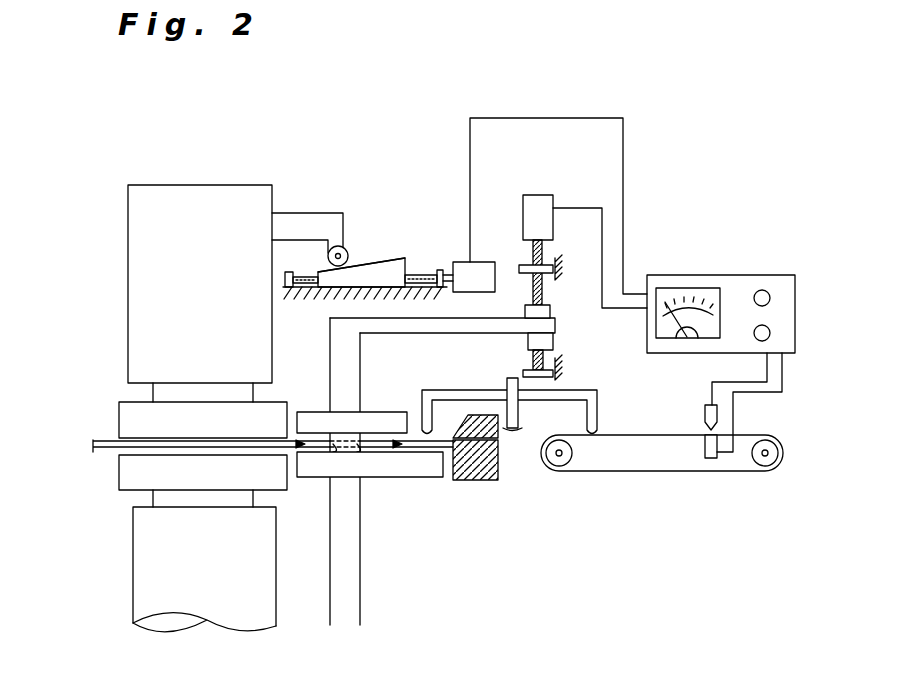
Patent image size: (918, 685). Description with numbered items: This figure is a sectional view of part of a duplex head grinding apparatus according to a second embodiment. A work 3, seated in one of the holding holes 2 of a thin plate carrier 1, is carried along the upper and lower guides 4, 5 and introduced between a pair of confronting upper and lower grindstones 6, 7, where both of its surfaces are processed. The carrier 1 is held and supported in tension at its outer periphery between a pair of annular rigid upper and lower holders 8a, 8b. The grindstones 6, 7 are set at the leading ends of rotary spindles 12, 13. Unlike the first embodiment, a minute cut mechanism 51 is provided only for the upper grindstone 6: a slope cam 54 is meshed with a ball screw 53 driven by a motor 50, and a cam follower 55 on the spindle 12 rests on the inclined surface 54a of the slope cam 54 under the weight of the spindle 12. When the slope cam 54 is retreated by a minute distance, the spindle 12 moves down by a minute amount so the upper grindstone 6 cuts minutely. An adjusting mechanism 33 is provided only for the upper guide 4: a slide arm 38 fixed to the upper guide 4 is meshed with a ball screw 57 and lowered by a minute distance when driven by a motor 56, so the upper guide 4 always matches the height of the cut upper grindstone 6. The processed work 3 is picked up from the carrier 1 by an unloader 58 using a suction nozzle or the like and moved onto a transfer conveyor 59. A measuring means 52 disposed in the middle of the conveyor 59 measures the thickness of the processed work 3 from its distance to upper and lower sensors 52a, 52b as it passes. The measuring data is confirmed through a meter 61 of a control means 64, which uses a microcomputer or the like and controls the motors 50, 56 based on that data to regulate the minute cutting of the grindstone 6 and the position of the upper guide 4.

The carrier 1 is at (105, 452).
The holding hole 2 is at (333, 448).
The work 3 is at (352, 445).
The upper guide 4 is at (378, 417).
The lower guide 5 is at (430, 467).
The upper grindstone 6 is at (130, 425).
The lower grindstone 7 is at (130, 477).
The upper holder 8a is at (473, 415).
The lower holder 8b is at (475, 478).
The spindle 12 is at (133, 287).
The spindle 13 is at (140, 573).
The adjusting mechanism 33 is at (560, 343).
The slide arm 38 is at (495, 325).
The motor 50 is at (477, 277).
The minute cut mechanism 51 is at (370, 250).
The measuring means 52 is at (692, 450).
The upper sensor 52a is at (705, 420).
The lower sensor 52b is at (710, 463).
The ball screw 53 is at (420, 270).
The slope cam 54 is at (377, 273).
The inclined surface 54a is at (360, 267).
The cam follower 55 is at (330, 254).
The motor 56 is at (537, 207).
The ball screw 57 is at (540, 257).
The unloader 58 is at (533, 395).
The transfer conveyor 59 is at (612, 473).
The meter 61 is at (688, 288).
The control means 64 is at (750, 273).